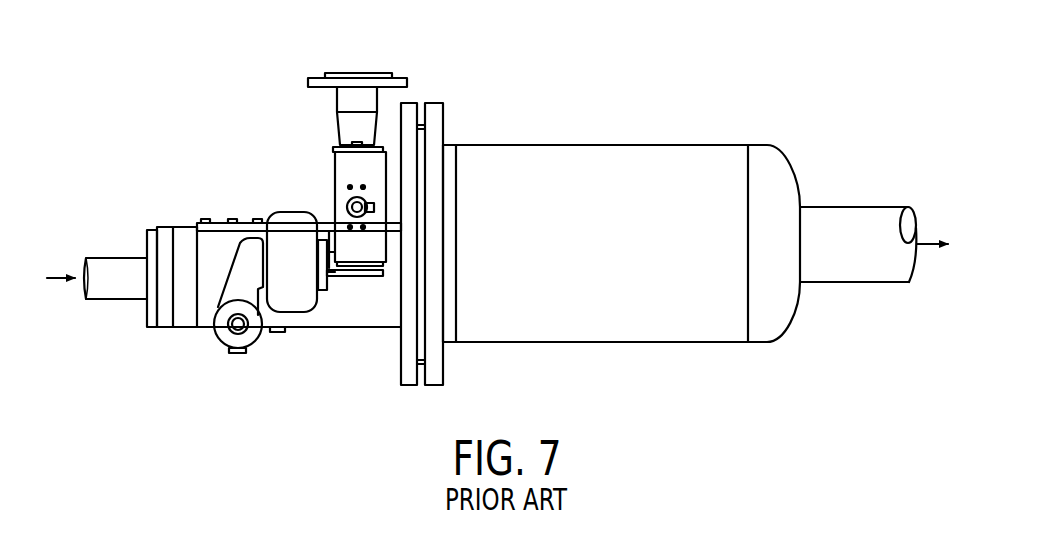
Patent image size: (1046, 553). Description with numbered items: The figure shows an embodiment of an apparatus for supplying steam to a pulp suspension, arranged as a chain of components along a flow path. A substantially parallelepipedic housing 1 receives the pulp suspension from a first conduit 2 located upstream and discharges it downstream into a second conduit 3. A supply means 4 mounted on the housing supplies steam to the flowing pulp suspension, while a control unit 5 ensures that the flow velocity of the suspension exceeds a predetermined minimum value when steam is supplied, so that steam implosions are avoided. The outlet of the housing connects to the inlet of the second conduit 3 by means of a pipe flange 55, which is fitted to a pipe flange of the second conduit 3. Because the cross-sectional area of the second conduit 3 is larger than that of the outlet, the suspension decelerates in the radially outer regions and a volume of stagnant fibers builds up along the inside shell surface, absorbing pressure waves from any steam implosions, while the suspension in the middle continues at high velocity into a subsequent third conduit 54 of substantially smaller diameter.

The housing 1 is at (200, 210).
The first conduit 2 is at (118, 258).
The second conduit 3 is at (721, 144).
The supply means 4 is at (410, 54).
The control unit 5 is at (222, 355).
The third conduit 54 is at (855, 206).
The pipe flange 55 is at (408, 100).